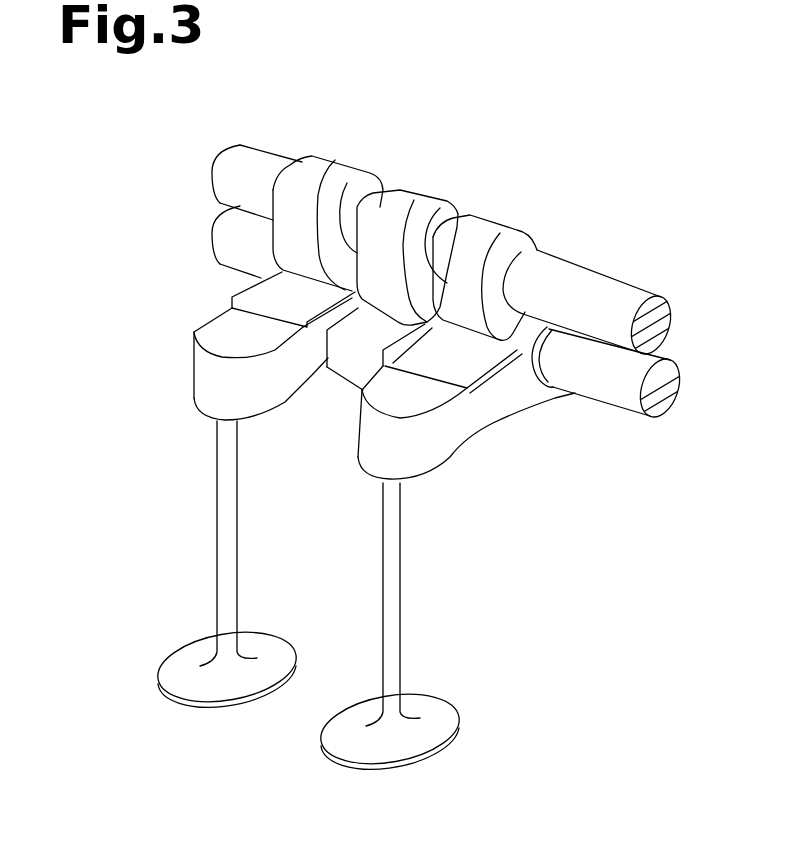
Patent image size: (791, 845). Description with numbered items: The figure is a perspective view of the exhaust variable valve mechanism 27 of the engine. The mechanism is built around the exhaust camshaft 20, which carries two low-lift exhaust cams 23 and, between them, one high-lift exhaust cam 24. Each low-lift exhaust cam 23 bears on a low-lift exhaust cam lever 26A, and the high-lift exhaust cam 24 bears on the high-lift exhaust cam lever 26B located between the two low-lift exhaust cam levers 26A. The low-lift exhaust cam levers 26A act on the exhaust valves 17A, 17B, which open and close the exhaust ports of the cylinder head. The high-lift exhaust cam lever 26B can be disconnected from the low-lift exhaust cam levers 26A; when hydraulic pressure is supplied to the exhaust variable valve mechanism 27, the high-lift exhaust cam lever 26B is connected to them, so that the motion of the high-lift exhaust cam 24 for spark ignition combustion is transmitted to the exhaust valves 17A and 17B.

The exhaust variable valve mechanism 27 is at (211, 122).
The exhaust camshaft 20 is at (573, 275).
The low-lift exhaust cams 23 is at (332, 170).
The high-lift exhaust cam 24 is at (413, 202).
The low-lift exhaust cam levers 26A is at (207, 373).
The high-lift exhaust cam lever 26B is at (347, 362).
The exhaust valve 17A is at (188, 655).
The exhaust valve 17B is at (438, 705).